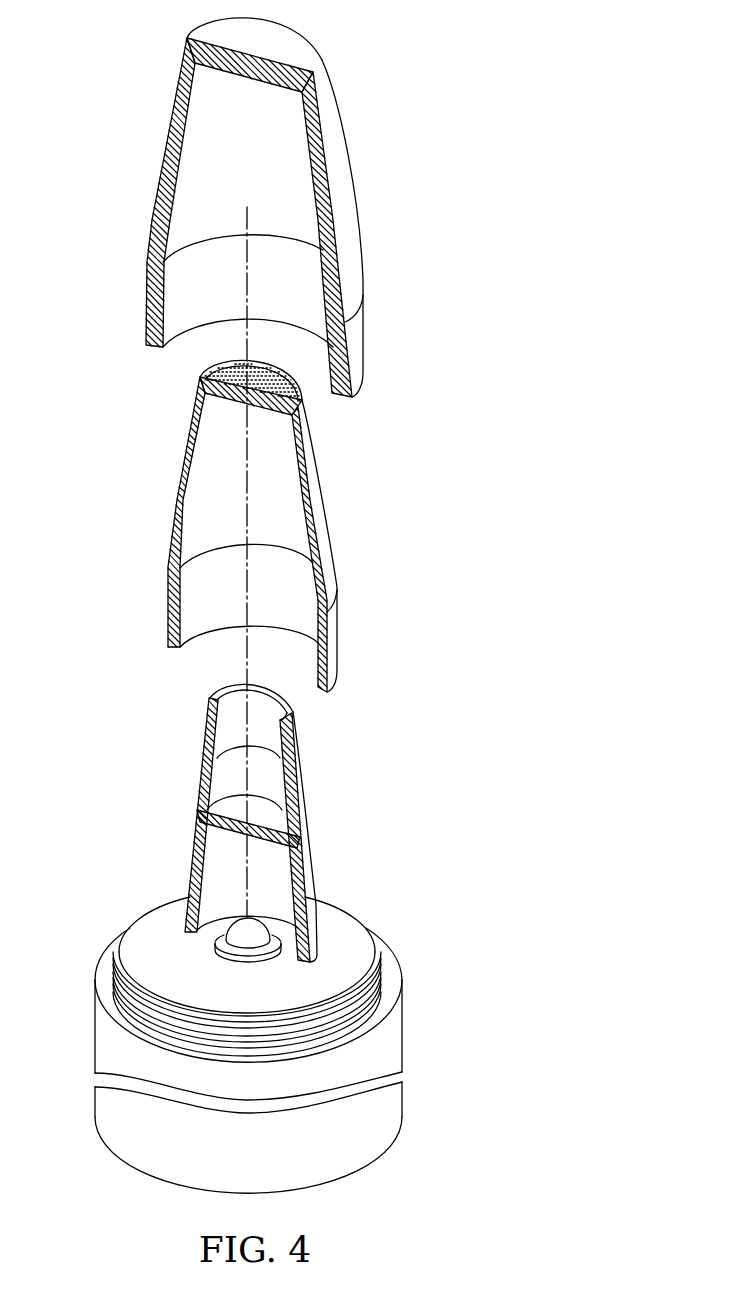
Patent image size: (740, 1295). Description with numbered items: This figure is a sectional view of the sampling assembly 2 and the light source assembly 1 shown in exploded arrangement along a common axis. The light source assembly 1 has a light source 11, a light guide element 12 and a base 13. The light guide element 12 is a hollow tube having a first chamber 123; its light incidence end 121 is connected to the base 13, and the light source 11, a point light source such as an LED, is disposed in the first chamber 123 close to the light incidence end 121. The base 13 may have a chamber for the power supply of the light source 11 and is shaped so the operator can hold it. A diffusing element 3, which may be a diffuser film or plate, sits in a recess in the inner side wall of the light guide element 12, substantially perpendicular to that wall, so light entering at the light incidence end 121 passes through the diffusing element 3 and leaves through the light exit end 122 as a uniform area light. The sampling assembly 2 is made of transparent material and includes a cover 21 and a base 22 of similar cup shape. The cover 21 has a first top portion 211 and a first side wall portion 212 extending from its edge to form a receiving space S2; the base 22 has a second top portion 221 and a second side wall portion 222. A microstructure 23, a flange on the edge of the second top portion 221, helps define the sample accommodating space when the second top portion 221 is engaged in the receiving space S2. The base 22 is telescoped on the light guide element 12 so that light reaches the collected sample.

The light source assembly 1 is at (346, 740).
The light source 11 is at (255, 938).
The light guide element 12 is at (318, 856).
The light incidence end 121 is at (183, 921).
The light exit end 122 is at (210, 702).
The first chamber 123 is at (231, 868).
The base 13 is at (99, 1040).
The sampling assembly 2 is at (437, 358).
The cover 21 is at (368, 365).
The first top portion 211 is at (270, 64).
The first side wall portion 212 is at (168, 141).
The receiving space S2 is at (281, 164).
The base 22 is at (324, 463).
The second top portion 221 is at (230, 400).
The second side wall portion 222 is at (327, 627).
The microstructure 23 is at (205, 373).
The diffusing element 3 is at (272, 832).